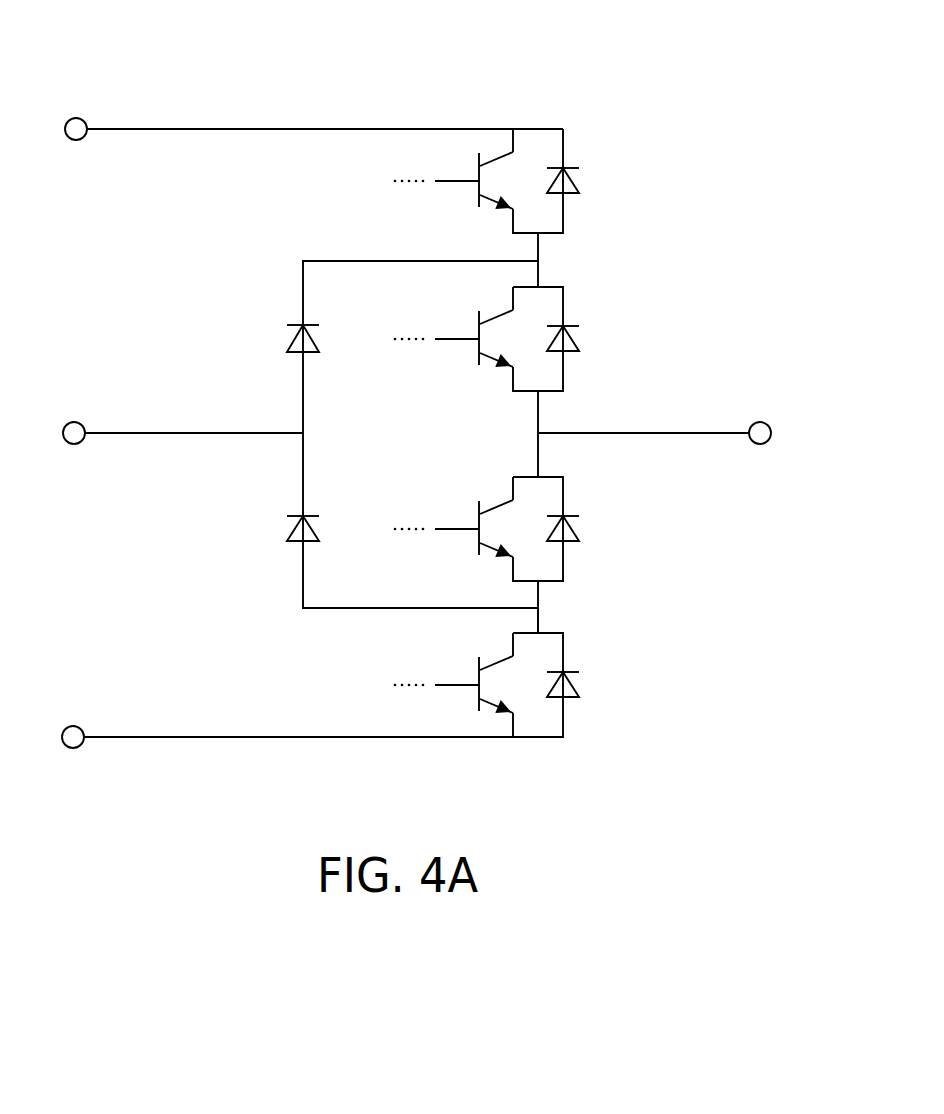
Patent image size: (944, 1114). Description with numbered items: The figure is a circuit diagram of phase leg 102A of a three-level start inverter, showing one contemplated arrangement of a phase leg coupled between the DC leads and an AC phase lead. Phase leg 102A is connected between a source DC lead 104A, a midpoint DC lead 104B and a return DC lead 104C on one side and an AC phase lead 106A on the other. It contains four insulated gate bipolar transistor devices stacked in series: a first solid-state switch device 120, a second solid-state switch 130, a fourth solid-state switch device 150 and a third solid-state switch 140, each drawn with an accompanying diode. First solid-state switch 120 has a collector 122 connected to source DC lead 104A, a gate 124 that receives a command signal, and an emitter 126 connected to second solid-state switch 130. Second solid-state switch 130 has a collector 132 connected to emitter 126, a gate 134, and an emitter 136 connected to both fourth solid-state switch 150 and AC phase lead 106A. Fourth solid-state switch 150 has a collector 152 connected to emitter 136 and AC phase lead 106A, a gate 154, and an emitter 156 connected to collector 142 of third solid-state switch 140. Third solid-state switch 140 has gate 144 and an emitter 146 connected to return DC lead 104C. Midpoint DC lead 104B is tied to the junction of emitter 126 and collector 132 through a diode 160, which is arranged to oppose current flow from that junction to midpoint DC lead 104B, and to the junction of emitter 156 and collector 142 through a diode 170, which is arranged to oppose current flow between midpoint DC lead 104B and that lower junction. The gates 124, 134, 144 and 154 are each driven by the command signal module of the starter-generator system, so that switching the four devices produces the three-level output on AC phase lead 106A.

The phase A leg 102A is at (119, 796).
The source DC lead 104A is at (161, 129).
The midpoint DC lead 104B is at (108, 433).
The return DC lead 104C is at (135, 737).
The AC phase lead 106A is at (672, 433).
The first solid-state switch device 120 is at (620, 176).
The collector 122 is at (505, 157).
The gate 124 is at (457, 181).
The emitter 126 is at (495, 187).
The second solid-state switch 130 is at (608, 322).
The collector 132 is at (497, 318).
The gate 134 is at (447, 338).
The emitter 136 is at (492, 360).
The third solid-state switch 140 is at (605, 687).
The collector 142 is at (497, 657).
The gate 144 is at (447, 683).
The emitter 146 is at (490, 694).
The fourth solid-state switch device 150 is at (600, 531).
The collector 152 is at (497, 505).
The gate 154 is at (447, 528).
The emitter 156 is at (492, 550).
The diode 160 is at (287, 351).
The diode 170 is at (288, 540).